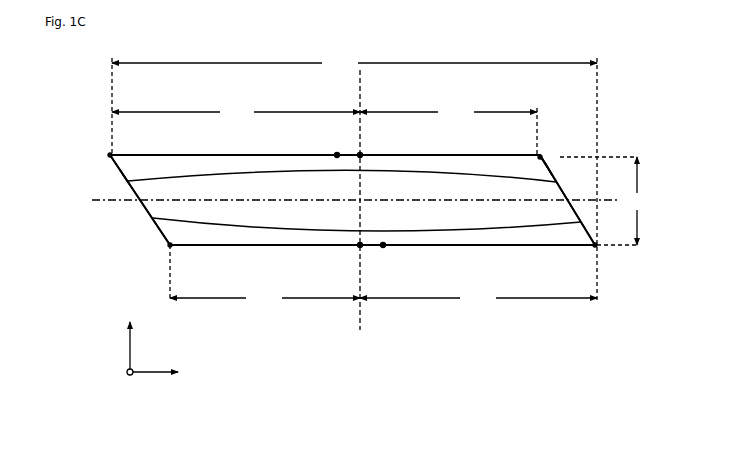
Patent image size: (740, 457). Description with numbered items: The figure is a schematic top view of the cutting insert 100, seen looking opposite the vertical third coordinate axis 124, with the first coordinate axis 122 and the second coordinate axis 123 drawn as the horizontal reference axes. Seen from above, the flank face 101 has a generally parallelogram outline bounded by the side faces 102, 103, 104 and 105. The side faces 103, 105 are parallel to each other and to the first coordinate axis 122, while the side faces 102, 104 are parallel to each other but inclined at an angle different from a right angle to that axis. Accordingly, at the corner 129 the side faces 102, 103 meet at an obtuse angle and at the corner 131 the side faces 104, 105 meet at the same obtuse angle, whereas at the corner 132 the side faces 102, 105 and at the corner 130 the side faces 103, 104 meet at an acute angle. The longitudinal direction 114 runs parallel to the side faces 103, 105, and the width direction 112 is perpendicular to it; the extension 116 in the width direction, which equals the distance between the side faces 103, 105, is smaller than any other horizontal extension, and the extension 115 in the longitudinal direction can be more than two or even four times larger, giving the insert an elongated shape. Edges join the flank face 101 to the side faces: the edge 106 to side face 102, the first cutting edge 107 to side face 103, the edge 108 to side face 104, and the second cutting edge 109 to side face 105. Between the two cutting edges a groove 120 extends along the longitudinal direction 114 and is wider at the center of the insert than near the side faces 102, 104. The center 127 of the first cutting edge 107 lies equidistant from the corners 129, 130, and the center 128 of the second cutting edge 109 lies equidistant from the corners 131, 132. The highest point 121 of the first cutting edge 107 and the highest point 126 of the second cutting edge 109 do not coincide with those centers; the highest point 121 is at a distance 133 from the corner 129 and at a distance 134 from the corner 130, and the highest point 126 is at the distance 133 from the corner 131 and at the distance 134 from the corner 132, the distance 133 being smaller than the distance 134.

The cutting insert 100 is at (102, 80).
The flank face 101 is at (546, 166).
The side face 102 is at (120, 210).
The side face 103 is at (518, 258).
The side face 104 is at (558, 175).
The side face 105 is at (183, 149).
The edge 106 is at (124, 178).
The first cutting edge 107 is at (562, 247).
The edge 108 is at (550, 168).
The second cutting edge 109 is at (488, 154).
The width direction 112 is at (363, 78).
The longitudinal direction 114 is at (606, 203).
The extension in the longitudinal direction 115 is at (354, 178).
The extension in the width direction 116 is at (604, 201).
The groove 120 is at (378, 198).
The highest point of the first cutting edge 121 is at (363, 248).
The first coordinate axis 122 is at (150, 375).
The second coordinate axis 123 is at (128, 345).
The third coordinate axis 124 is at (126, 372).
The highest point of the second cutting edge 126 is at (359, 152).
The center of the first cutting edge 127 is at (388, 247).
The center of the second cutting edge 128 is at (336, 153).
The corner 129 is at (168, 249).
The corner 130 is at (597, 248).
The corner 131 is at (538, 160).
The corner 132 is at (110, 155).
The distance 133 is at (353, 205).
The distance 134 is at (354, 205).